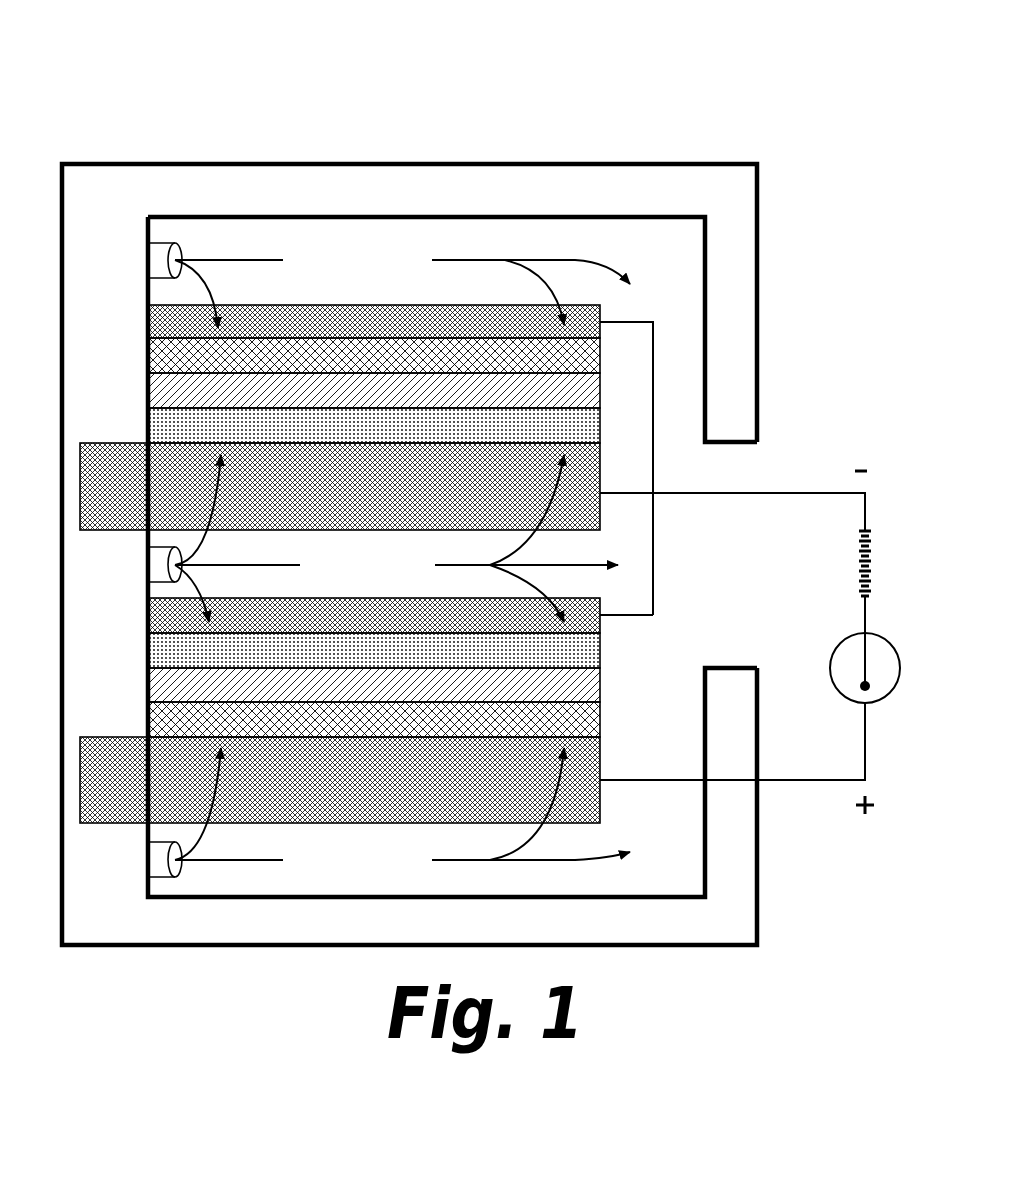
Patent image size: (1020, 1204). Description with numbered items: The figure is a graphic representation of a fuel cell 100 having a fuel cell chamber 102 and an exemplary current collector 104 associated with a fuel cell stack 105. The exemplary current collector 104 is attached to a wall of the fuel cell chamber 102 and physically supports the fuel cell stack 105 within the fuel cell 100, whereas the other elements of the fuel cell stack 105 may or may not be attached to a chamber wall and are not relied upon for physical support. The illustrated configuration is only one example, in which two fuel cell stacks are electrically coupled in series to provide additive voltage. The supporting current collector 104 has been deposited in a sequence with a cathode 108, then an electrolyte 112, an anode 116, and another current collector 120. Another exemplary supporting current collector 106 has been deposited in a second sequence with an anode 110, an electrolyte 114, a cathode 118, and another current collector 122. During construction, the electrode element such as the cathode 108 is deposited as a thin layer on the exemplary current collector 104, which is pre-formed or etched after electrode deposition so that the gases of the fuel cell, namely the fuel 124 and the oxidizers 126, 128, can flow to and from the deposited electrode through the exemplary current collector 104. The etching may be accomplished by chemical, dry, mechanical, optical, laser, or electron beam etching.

The fuel cell 100 is at (394, 90).
The fuel cell chamber 102 is at (566, 201).
The current collector 104 is at (523, 793).
The fuel cell stack 105 is at (634, 658).
The current collector 106 is at (523, 498).
The cathode 108 is at (525, 731).
The anode 110 is at (512, 436).
The electrolyte 112 is at (475, 696).
The electrolyte 114 is at (475, 403).
The anode 116 is at (513, 661).
The cathode 118 is at (528, 366).
The current collector 120 is at (520, 628).
The current collector 122 is at (519, 335).
The fuel 124 is at (397, 575).
The oxidizer 126 is at (422, 870).
The oxidizer 128 is at (422, 271).